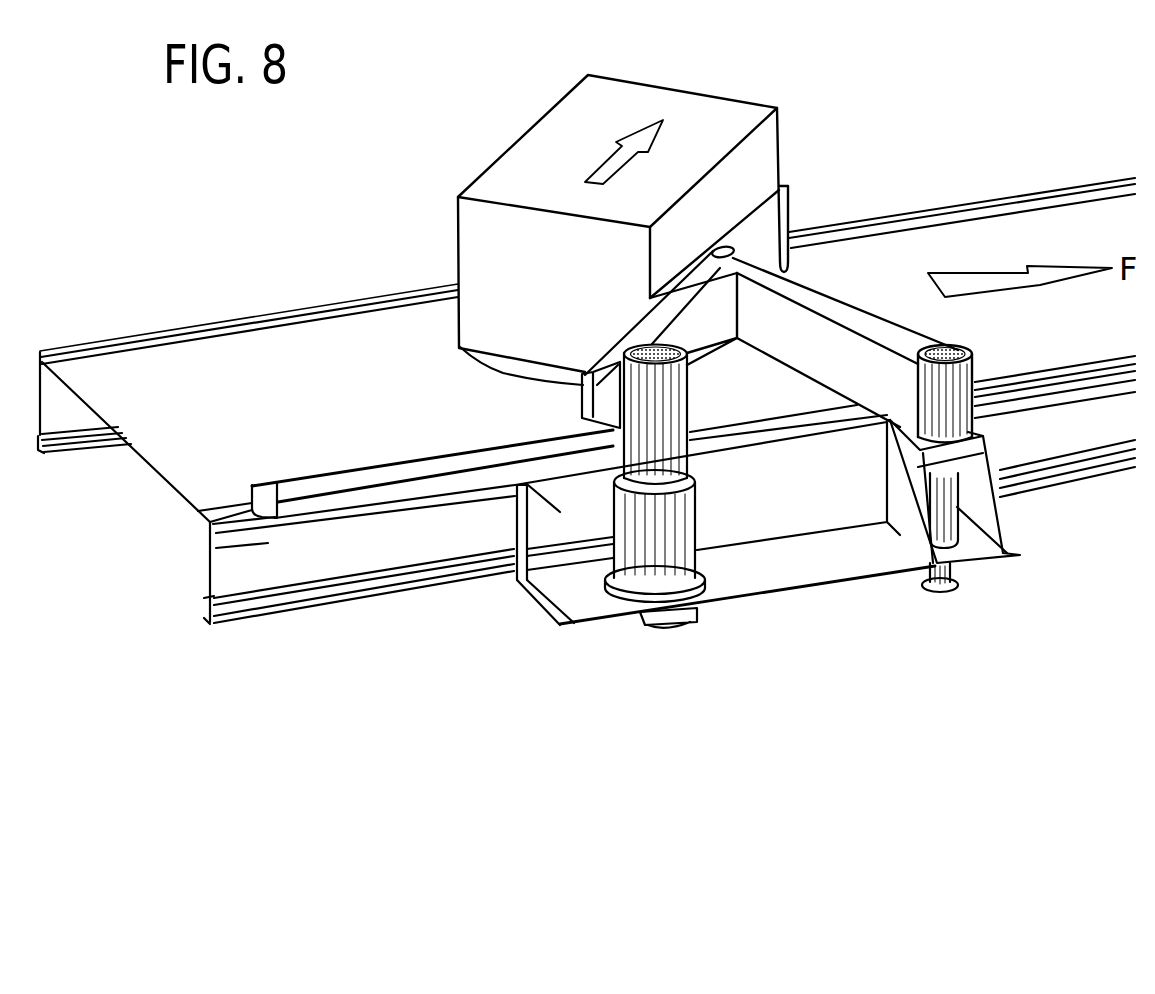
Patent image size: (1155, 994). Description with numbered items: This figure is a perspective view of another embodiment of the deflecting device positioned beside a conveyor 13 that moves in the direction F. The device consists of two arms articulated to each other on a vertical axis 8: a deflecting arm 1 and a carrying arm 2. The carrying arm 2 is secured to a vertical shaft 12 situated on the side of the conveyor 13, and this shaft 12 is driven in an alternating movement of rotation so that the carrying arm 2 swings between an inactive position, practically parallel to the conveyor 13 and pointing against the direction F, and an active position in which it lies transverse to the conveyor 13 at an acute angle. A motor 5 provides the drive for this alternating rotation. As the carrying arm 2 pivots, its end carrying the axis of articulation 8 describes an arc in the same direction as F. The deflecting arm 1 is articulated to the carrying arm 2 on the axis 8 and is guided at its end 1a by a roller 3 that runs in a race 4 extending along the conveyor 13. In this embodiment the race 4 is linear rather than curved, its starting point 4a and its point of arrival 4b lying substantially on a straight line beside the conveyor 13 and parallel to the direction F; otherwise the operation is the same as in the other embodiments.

The deflecting arm 1 is at (762, 200).
The end of the deflecting arm 1a is at (460, 347).
The carrying arm 2 is at (868, 315).
The roller 3 is at (560, 512).
The race 4 is at (446, 488).
The starting point of the race 4a is at (278, 518).
The point of arrival of the race 4b is at (615, 430).
The motor 5 is at (680, 530).
The vertical axis 8 is at (734, 250).
The vertical shaft 12 is at (953, 500).
The conveyor 13 is at (167, 454).